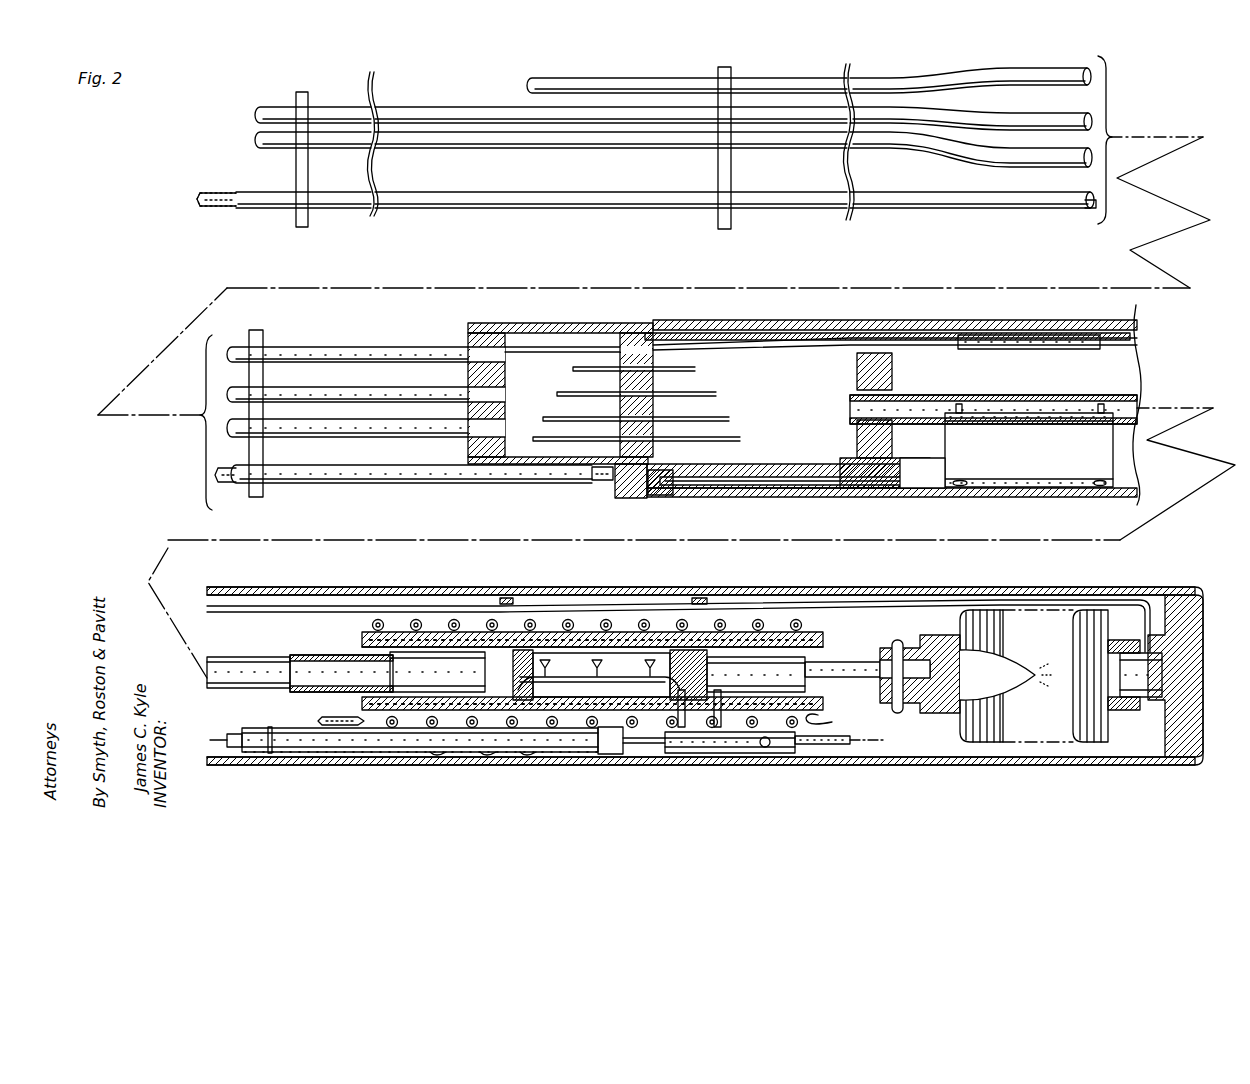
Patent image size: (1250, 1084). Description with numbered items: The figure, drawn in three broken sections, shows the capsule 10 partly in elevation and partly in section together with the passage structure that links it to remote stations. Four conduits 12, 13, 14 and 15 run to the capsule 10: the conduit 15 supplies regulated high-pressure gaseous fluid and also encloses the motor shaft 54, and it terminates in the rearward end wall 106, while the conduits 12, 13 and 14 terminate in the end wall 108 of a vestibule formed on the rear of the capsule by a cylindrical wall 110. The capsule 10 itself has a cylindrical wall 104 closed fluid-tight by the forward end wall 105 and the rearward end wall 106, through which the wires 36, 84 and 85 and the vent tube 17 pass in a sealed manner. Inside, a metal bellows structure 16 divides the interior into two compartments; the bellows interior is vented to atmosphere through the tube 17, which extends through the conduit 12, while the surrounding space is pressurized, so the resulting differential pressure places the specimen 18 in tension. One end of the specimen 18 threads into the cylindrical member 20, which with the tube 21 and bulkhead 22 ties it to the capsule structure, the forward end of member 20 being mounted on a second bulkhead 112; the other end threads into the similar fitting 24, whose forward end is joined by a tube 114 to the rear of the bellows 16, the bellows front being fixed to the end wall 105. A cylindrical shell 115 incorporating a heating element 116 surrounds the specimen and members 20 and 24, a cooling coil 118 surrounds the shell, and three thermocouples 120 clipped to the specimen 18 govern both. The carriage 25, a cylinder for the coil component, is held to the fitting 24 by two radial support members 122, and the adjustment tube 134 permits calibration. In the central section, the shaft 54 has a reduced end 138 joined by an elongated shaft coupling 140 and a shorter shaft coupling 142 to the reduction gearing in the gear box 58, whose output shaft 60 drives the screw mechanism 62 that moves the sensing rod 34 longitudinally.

The capsule 10 is at (1029, 317).
The conduit 12 is at (982, 80).
The conduit 13 is at (984, 128).
The conduit 14 is at (988, 162).
The conduit 15 is at (980, 203).
The metal bellows structure 16 is at (1055, 648).
The vent tube 17 is at (548, 350).
The specimen 18 is at (622, 683).
The cylindrical member 20 is at (408, 698).
The tube 21 is at (254, 666).
The bulkhead 22 is at (893, 368).
The fitting 24 is at (740, 654).
The carriage 25 is at (720, 754).
The sensing rod 34 is at (646, 744).
The wires 36 is at (544, 438).
The shaft 54 is at (214, 205).
The gear box 58 is at (1040, 447).
The output shaft 60 is at (1128, 470).
The screw mechanism 62 is at (358, 752).
The wire 84 is at (576, 369).
The wire 85 is at (558, 395).
The cylindrical wall 104 is at (818, 322).
The forward end wall 105 is at (1190, 642).
The rearward end wall 106 is at (654, 380).
The end wall 108 is at (498, 380).
The cylindrical wall 110 is at (542, 323).
The second bulkhead 112 is at (512, 722).
The tube 114 is at (836, 662).
The cylindrical shell 115 is at (586, 624).
The heating element 116 is at (548, 632).
The cooling coil 118 is at (490, 622).
The thermocouples 120 is at (546, 670).
The radial support members 122 is at (690, 728).
The adjustment tube 134 is at (832, 742).
The reduced end 138 is at (666, 496).
The elongated shaft coupling 140 is at (740, 498).
The shorter shaft coupling 142 is at (866, 498).